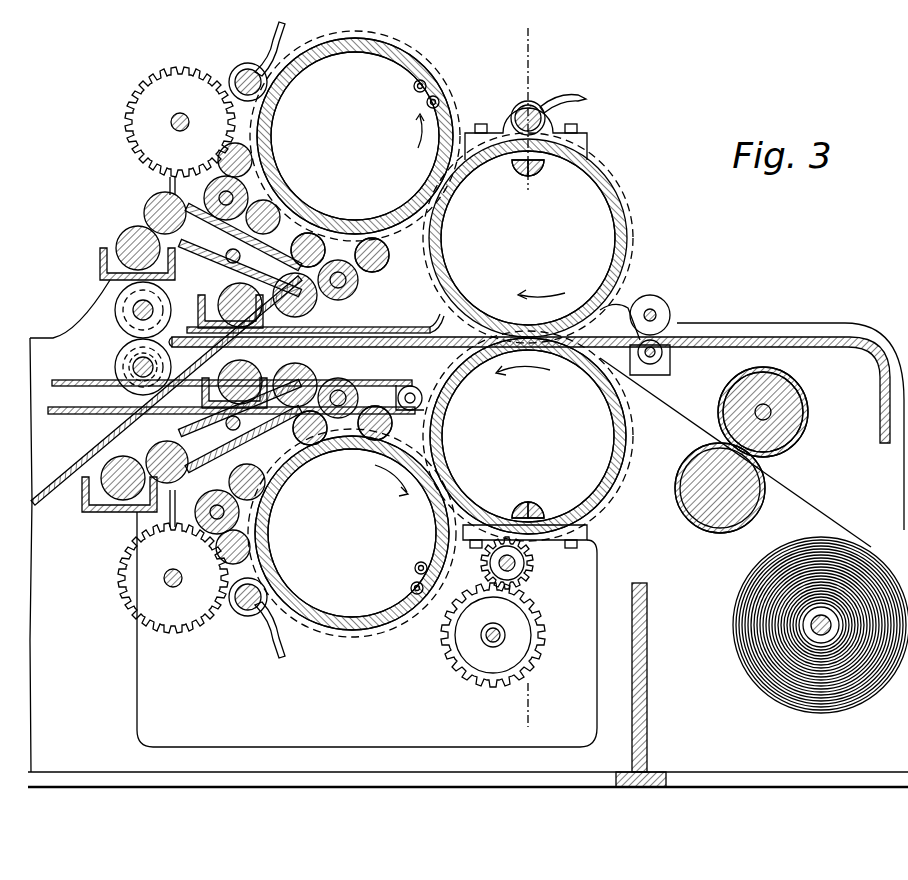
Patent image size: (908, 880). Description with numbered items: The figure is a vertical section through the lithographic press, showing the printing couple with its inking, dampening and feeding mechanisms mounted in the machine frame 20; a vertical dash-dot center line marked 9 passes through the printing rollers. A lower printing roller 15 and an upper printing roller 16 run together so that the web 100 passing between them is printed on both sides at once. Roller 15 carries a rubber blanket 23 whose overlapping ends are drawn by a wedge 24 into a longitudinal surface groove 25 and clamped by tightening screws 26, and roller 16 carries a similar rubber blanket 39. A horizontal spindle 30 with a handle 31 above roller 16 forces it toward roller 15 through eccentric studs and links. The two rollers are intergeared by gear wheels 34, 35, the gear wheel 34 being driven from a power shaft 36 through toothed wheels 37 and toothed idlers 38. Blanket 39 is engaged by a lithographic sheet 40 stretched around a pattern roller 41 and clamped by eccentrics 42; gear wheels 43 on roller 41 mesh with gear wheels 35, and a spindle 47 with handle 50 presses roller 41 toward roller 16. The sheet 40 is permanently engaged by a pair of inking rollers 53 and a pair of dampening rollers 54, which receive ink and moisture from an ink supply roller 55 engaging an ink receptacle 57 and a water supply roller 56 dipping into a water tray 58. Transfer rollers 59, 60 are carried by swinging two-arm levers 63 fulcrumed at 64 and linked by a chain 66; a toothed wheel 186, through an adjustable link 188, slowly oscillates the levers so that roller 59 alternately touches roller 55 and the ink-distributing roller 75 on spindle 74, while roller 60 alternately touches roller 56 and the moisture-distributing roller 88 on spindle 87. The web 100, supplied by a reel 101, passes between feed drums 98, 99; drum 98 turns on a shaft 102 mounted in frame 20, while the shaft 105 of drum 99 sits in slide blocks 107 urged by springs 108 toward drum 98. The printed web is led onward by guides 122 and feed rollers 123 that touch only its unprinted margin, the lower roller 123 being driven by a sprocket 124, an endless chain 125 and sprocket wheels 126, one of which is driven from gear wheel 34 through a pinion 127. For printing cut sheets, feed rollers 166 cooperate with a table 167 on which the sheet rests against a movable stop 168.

The axis line 9 is at (527, 378).
The lower printing roller 15 is at (614, 432).
The upper printing roller 16 is at (614, 226).
The machine frame 20 is at (468, 533).
The rubber blanket 23 is at (640, 440).
The wedge 24 is at (516, 170).
The longitudinal surface groove 25 is at (540, 170).
The tightening screws 26 is at (528, 180).
The horizontal spindle 30 is at (518, 106).
The handle 31 is at (586, 99).
The gear wheel 34 is at (636, 457).
The gear wheel 35 is at (636, 216).
The power shaft 36 is at (488, 642).
The toothed wheels 37 is at (546, 646).
The toothed idlers 38 is at (530, 571).
The rubber blanket 39 is at (628, 196).
The lithographic sheet 40 is at (392, 46).
The pattern roller 41 is at (338, 54).
The eccentrics 42 is at (414, 92).
The gear wheels 43 is at (430, 70).
The spindle 47 is at (240, 68).
The handle 50 is at (284, 32).
The inking rollers 53 is at (360, 238).
The dampening rollers 54 is at (275, 195).
The ink supply roller 55 is at (225, 297).
The water supply roller 56 is at (117, 246).
The ink receptacle 57 is at (199, 302).
The water tray 58 is at (99, 263).
The transfer roller 59 is at (316, 304).
The transfer roller 60 is at (145, 211).
The two-arm levers 63 is at (222, 474).
The fulcrum 64 is at (226, 254).
The chain 66 is at (245, 212).
The spindle 74 is at (356, 290).
The ink-distributing roller 75 is at (358, 282).
The spindle 87 is at (215, 186).
The moisture-distributing roller 88 is at (218, 165).
The feed drum 98 is at (716, 530).
The feed drum 99 is at (808, 426).
The web 100 is at (822, 504).
The reel 101 is at (785, 685).
The shaft 102 is at (760, 504).
The shaft 105 is at (736, 400).
The slide blocks 107 is at (806, 444).
The springs 108 is at (800, 408).
The guides 122 is at (325, 320).
The feed rollers 123 is at (114, 310).
The sprocket 124 is at (130, 357).
The endless chain 125 is at (95, 407).
The sprocket wheels 126 is at (416, 386).
The pinion 127 is at (392, 425).
The feed rollers 166 is at (668, 310).
The table 167 is at (770, 336).
The movable stop 168 is at (576, 360).
The toothed wheel 186 is at (142, 88).
The adjustable link 188 is at (168, 184).